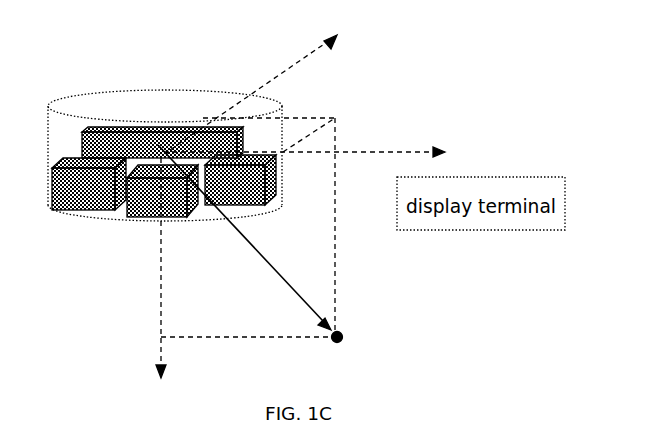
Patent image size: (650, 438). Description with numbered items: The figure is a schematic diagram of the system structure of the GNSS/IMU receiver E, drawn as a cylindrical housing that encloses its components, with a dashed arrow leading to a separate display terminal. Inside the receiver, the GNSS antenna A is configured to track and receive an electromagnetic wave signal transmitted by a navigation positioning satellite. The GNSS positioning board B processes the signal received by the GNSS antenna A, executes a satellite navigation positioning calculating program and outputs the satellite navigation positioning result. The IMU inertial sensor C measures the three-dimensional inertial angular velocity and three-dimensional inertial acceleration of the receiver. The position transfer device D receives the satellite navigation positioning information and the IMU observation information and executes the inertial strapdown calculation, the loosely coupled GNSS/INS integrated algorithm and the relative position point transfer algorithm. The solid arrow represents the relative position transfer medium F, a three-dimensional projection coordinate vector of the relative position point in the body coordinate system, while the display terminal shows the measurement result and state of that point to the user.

The GNSS antenna A is at (162, 146).
The GNSS positioning board B is at (89, 184).
The IMU inertial sensor C is at (162, 191).
The position transfer device D is at (240, 180).
The GNSS/IMU receiver E is at (172, 141).
The relative position transfer medium F is at (244, 237).